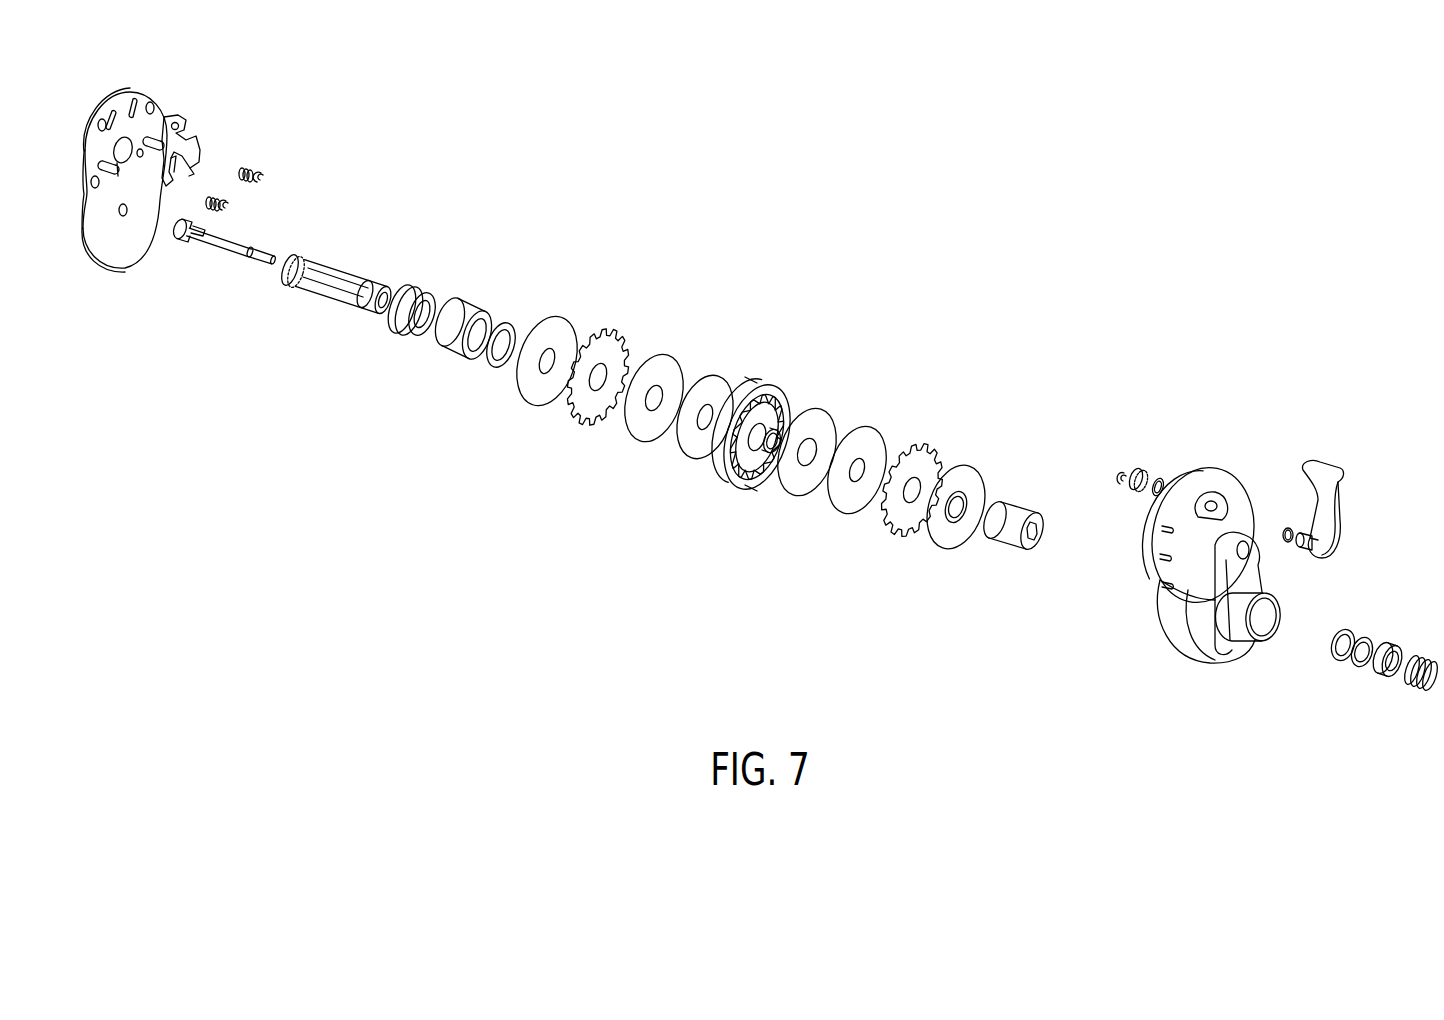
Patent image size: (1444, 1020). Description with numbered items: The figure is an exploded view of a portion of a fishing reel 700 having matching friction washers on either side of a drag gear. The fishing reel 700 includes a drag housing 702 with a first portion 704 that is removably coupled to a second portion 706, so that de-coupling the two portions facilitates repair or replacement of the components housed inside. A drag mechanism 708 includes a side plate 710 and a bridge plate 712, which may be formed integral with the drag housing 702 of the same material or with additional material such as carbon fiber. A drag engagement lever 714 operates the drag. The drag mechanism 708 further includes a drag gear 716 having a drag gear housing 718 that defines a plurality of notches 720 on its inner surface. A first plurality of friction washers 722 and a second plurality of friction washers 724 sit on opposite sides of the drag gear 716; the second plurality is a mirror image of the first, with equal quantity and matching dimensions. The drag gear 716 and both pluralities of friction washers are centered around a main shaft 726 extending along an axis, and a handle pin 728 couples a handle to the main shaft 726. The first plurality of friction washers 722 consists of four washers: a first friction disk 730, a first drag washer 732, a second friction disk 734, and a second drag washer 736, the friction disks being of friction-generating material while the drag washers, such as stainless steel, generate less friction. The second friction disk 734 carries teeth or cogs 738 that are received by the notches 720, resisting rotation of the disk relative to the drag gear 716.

The fishing reel 700 is at (958, 162).
The drag housing 702 is at (1227, 648).
The first portion 704 is at (1182, 647).
The second portion 706 is at (103, 253).
The drag mechanism 708 is at (810, 350).
The side plate 710 is at (1175, 627).
The bridge plate 712 is at (142, 235).
The drag engagement lever 714 is at (1317, 477).
The drag gear 716 is at (727, 480).
The drag gear housing 718 is at (752, 385).
The notches 720 is at (797, 403).
The first plurality of friction washers 722 is at (937, 417).
The second plurality of friction washers 724 is at (633, 322).
The main shaft 726 is at (333, 275).
The handle pin 728 is at (248, 250).
The first friction disk 730 is at (797, 488).
The first drag washer 732 is at (850, 508).
The second friction disk 734 is at (892, 537).
The second drag washer 736 is at (972, 480).
The teeth or cogs 738 is at (922, 457).